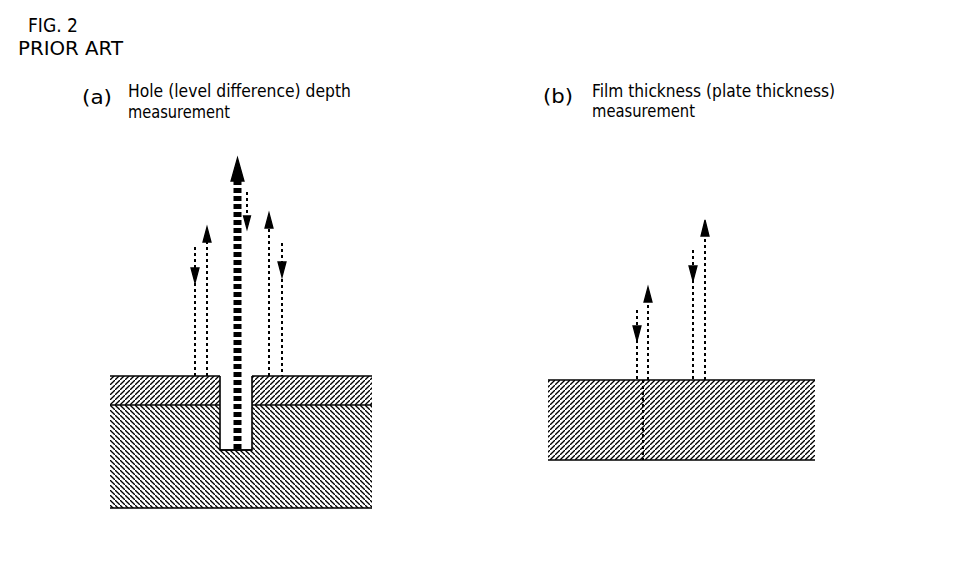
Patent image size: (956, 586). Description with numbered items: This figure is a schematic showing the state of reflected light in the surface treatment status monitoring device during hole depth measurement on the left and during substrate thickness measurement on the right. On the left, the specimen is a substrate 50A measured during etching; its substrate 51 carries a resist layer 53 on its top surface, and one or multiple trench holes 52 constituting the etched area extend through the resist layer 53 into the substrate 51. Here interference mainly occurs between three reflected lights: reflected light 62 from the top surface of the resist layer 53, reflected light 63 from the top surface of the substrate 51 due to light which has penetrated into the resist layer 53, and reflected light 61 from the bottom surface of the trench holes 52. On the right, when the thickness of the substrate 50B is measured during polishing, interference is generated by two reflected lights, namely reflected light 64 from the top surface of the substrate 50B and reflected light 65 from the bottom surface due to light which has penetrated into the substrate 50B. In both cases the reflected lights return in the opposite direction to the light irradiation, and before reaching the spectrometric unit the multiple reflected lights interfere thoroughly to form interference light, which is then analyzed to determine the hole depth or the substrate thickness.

The substrate 50A is at (204, 420).
The substrate 51 is at (333, 405).
The trench hole 52 is at (222, 452).
The resist layer 53 is at (130, 378).
The reflected light 61 is at (241, 183).
The reflected light 62 is at (283, 238).
The reflected light 63 is at (193, 250).
The substrate 50B is at (578, 327).
The reflected light 64 is at (708, 258).
The reflected light 65 is at (660, 328).